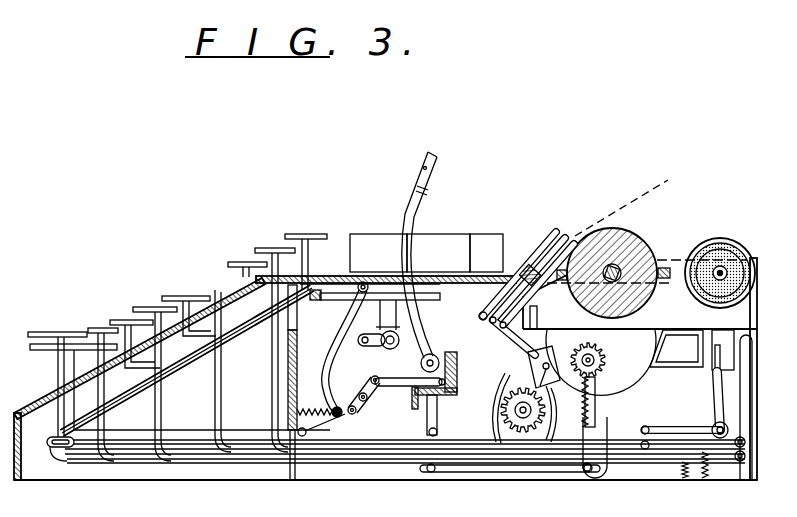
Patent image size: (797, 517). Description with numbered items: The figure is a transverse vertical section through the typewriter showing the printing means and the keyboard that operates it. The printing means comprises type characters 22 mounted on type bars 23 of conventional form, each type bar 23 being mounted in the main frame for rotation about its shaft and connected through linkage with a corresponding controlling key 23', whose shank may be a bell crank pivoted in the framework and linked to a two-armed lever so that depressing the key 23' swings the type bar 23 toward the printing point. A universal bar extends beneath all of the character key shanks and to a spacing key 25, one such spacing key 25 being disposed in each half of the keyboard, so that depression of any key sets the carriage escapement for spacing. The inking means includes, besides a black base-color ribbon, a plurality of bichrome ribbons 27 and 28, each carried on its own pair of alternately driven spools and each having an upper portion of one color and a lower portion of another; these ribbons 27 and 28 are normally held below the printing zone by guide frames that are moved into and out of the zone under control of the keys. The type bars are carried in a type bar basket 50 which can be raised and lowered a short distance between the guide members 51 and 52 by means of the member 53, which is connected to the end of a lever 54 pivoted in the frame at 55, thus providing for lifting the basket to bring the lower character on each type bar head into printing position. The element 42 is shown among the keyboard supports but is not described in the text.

The type characters 22 is at (437, 157).
The type bar 23 is at (400, 255).
The controlling key 23' is at (209, 335).
The spacing key 25 is at (45, 350).
The bichrome ribbon 27 is at (378, 253).
The bichrome ribbon 28 is at (455, 253).
The support flange 42 is at (50, 332).
The type bar basket 50 is at (453, 353).
The guide member 51 is at (460, 378).
The guide member 52 is at (420, 398).
The member 53 is at (437, 420).
The lever 54 is at (398, 420).
The pivot 55 is at (398, 432).